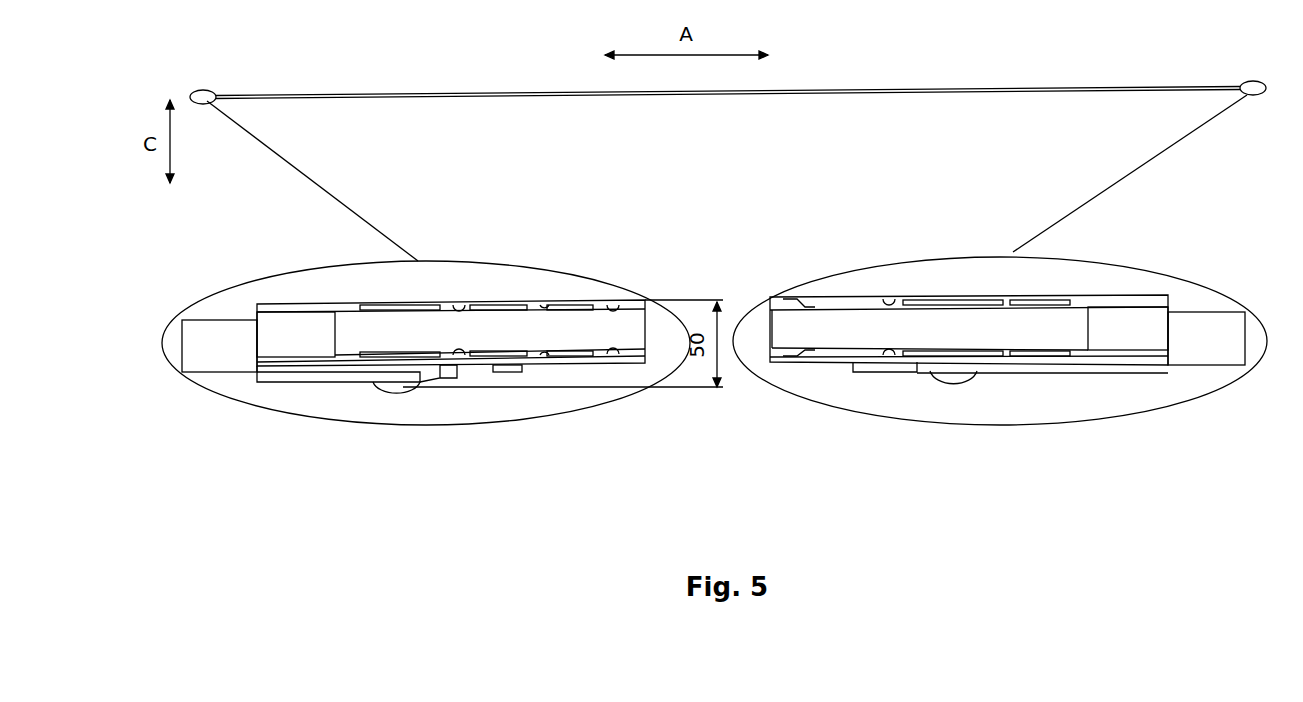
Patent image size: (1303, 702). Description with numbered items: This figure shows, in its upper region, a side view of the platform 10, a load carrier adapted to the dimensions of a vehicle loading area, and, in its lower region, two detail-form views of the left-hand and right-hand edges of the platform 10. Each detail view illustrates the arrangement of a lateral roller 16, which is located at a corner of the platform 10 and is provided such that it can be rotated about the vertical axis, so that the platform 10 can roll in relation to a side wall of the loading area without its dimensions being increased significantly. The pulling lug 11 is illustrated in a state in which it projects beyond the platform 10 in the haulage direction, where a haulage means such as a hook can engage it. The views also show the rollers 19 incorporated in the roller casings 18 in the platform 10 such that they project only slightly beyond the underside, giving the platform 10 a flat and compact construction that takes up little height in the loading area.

The platform 10 is at (493, 298).
The pulling lug 11 is at (228, 377).
The lateral roller 16 is at (298, 335).
The roller casing 18 is at (357, 374).
The roller 19 is at (402, 394).